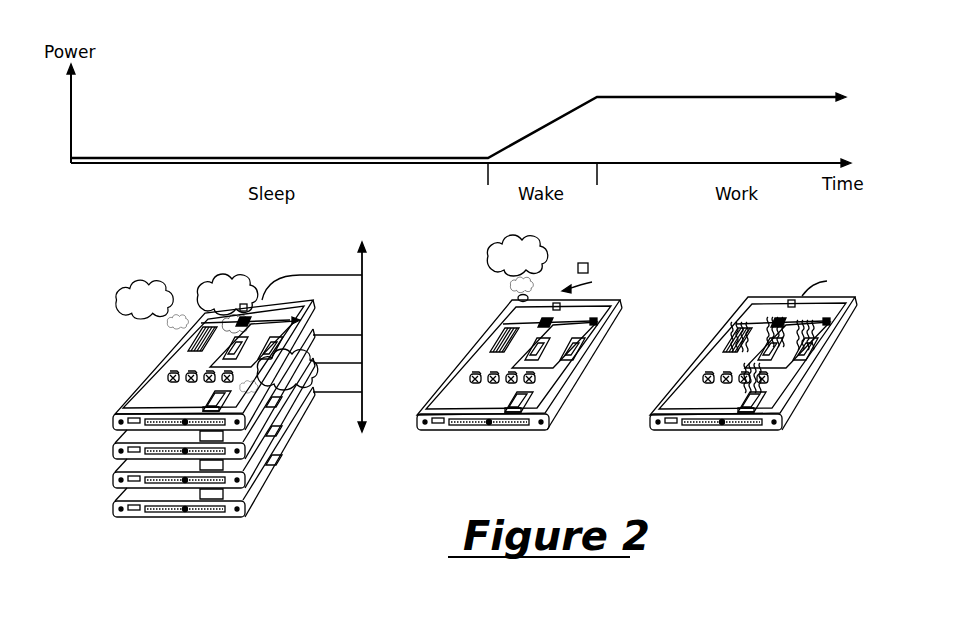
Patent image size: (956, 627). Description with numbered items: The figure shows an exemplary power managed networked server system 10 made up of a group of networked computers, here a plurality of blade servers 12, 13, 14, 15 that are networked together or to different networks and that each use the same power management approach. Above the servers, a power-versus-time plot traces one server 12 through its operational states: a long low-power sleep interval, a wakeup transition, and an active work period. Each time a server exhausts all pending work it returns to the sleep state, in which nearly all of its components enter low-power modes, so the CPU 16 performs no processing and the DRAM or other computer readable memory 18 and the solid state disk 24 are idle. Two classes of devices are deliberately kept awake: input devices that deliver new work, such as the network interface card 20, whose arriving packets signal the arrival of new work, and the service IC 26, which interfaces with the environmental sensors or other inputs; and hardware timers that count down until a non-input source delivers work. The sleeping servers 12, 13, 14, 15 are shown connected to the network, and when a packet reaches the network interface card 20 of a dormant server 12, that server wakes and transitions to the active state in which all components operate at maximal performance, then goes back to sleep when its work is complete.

The system 10 is at (86, 326).
The server 12 is at (128, 399).
The blade server 13 is at (113, 451).
The blade server 14 is at (113, 481).
The blade server 15 is at (113, 507).
The CPU 16 is at (540, 357).
The DRAM or other computer readable memory 18 is at (492, 334).
The network interface card 20 is at (538, 322).
The solid state disk 24 is at (505, 398).
The service IC 26 is at (600, 321).